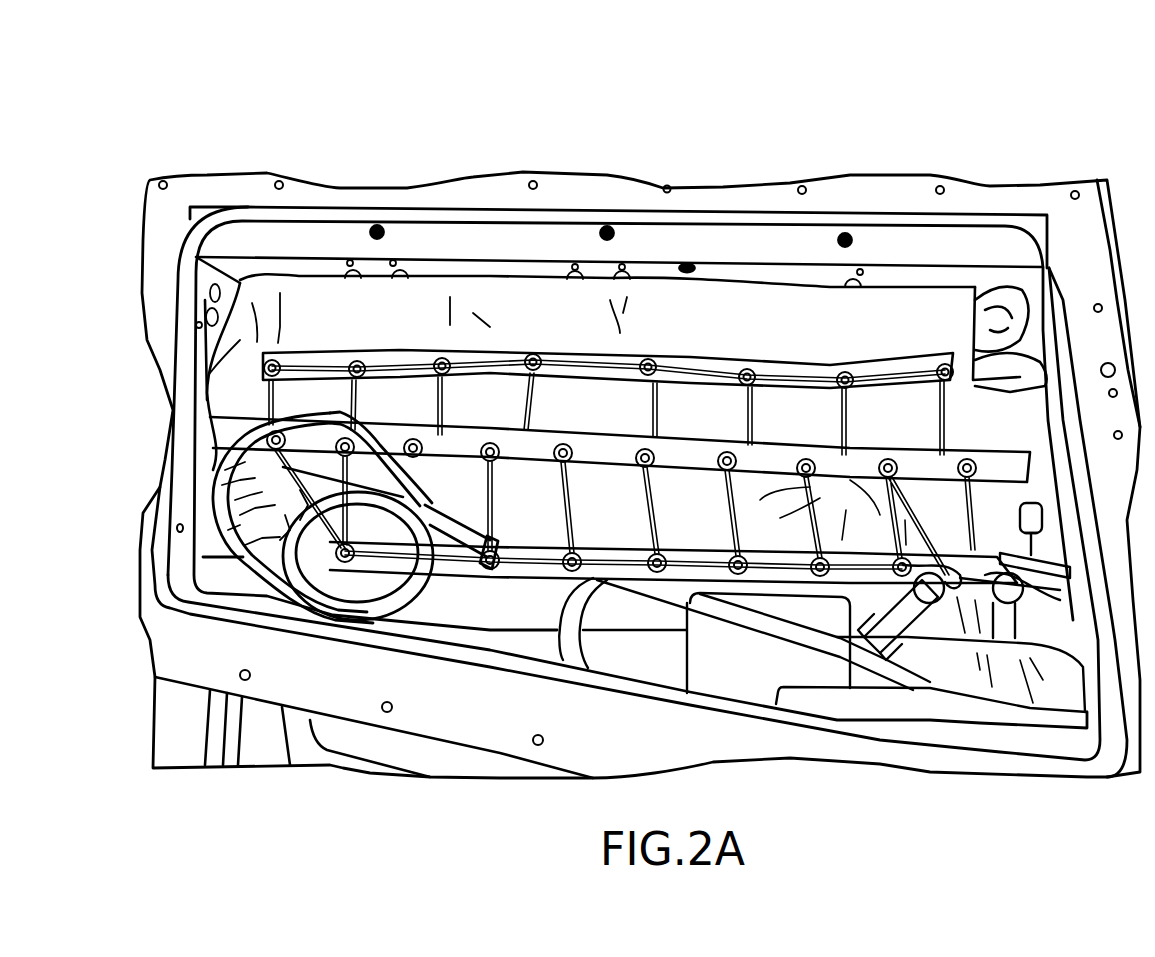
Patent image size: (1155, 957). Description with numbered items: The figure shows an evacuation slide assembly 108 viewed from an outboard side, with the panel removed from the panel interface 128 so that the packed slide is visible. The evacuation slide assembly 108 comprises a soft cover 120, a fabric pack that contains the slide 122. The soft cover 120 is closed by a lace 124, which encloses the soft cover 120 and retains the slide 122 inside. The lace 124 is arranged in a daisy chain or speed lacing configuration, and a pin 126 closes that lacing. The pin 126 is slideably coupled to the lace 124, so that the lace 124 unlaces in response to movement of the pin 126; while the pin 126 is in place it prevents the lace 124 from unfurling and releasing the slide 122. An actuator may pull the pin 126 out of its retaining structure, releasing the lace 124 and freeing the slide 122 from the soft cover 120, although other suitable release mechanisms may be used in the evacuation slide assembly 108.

The evacuation slide assembly 108 is at (196, 133).
The soft cover 120 is at (490, 305).
The slide 122 is at (843, 497).
The lace 124 is at (650, 490).
The pin 126 is at (855, 392).
The panel interface 128 is at (290, 235).